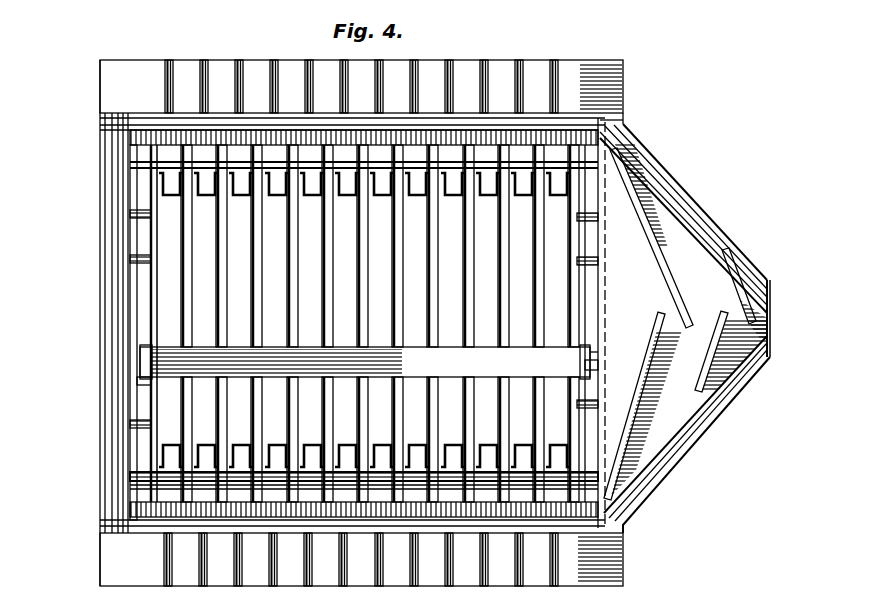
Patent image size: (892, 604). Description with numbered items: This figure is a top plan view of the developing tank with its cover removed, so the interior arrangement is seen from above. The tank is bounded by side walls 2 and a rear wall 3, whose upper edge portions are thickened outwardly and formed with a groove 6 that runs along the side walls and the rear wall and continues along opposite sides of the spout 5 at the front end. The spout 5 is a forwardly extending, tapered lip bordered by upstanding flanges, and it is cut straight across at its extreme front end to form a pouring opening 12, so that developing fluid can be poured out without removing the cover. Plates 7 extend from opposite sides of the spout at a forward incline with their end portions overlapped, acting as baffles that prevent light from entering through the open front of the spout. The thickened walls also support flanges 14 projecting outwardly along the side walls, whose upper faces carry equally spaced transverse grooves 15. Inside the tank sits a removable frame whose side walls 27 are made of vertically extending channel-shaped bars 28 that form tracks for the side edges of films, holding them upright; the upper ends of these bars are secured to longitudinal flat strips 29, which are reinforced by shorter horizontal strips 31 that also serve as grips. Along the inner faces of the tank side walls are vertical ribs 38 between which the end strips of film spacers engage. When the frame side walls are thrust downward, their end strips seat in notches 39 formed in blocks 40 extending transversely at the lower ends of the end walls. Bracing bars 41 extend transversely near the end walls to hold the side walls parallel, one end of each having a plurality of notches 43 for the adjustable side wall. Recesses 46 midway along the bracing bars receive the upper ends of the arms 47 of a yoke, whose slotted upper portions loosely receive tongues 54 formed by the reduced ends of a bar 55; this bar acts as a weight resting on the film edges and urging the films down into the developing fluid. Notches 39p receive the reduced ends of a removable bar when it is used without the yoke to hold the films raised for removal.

The side walls 2 is at (594, 123).
The rear wall 3 is at (100, 343).
The spout 5 is at (667, 237).
The groove 6 is at (592, 123).
The plates 7 is at (672, 278).
The pouring opening 12 is at (760, 327).
The flanges 14 is at (607, 86).
The grooves 15 is at (233, 66).
The side walls 27 is at (548, 124).
The bars 28 is at (237, 173).
The flat strips 29 is at (198, 166).
The strips 31 is at (415, 122).
The ribs 38 is at (378, 150).
The notches 39 is at (135, 215).
The notches 39p is at (145, 428).
The blocks 40 is at (128, 253).
The bracing bars 41 is at (580, 277).
The notches 43 is at (592, 370).
The recesses 46 is at (140, 348).
The arms 47 is at (148, 380).
The tongues 54 is at (148, 348).
The bar 55 is at (303, 353).